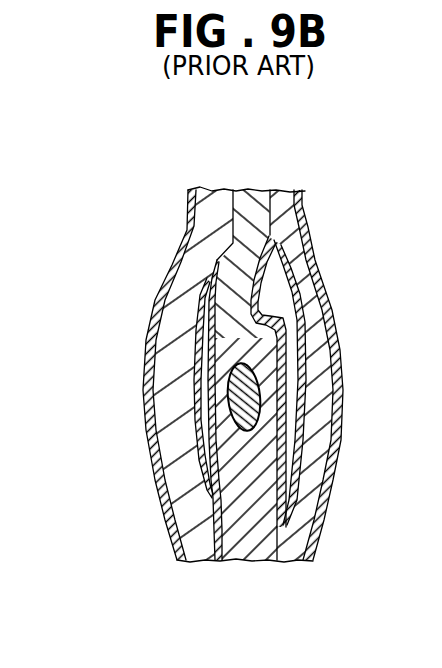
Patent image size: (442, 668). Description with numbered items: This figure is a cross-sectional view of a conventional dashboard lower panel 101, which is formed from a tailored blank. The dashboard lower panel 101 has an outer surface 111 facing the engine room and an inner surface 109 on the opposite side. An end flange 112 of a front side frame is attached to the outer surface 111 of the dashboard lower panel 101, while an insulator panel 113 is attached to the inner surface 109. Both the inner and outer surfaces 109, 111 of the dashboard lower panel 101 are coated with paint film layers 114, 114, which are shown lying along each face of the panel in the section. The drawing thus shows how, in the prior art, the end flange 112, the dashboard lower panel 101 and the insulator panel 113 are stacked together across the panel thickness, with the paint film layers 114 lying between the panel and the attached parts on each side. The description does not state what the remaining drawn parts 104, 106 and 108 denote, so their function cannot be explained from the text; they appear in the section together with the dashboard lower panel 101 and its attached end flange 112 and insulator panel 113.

The dashboard lower panel 101 is at (207, 169).
The distal end 104 is at (245, 563).
The main body 106 is at (250, 189).
The core member 108 is at (262, 392).
The inner surface 109 is at (284, 210).
The outer surface 111 is at (205, 255).
The end flange 112 is at (167, 303).
The insulator panel 113 is at (328, 277).
The paint film layer 114 is at (283, 408).